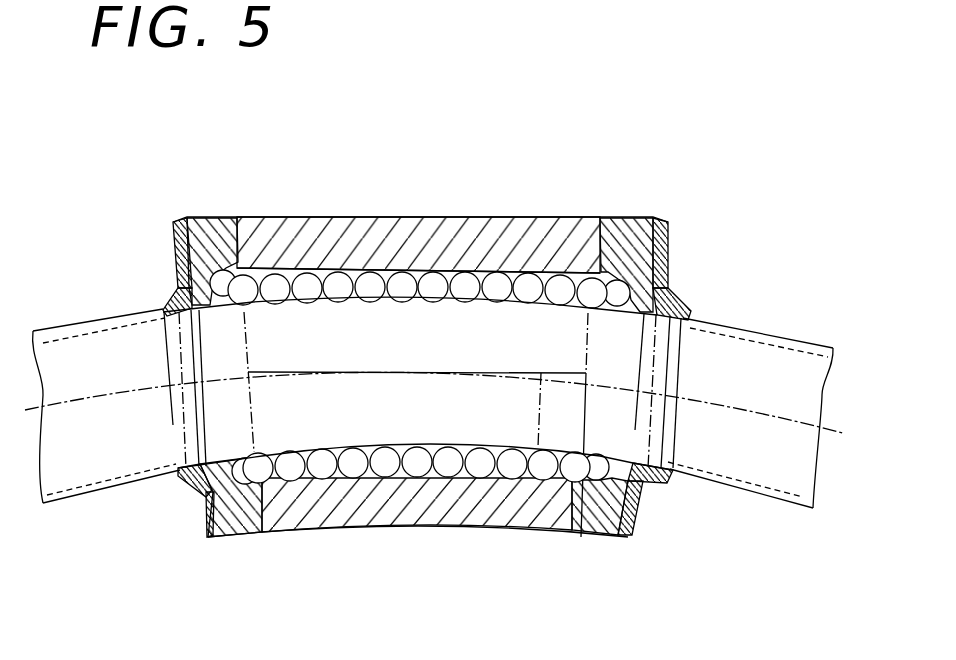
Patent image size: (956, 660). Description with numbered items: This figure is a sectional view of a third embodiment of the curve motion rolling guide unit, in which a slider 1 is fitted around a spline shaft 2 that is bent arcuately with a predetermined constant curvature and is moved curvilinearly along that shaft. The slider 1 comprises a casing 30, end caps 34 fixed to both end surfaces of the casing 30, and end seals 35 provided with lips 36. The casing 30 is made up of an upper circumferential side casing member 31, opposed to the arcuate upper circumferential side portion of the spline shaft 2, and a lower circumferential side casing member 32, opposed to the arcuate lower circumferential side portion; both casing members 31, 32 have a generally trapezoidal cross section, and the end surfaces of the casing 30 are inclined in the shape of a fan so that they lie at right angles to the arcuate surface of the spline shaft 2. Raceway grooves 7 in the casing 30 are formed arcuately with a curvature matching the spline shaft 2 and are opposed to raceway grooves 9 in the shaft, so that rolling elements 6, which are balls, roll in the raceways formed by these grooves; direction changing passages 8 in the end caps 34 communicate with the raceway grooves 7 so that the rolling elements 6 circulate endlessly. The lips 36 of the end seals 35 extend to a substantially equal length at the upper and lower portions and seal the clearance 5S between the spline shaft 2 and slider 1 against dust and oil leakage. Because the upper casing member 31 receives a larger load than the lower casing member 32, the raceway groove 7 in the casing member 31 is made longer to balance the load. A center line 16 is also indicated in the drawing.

The slider 1 is at (484, 204).
The spline shaft 2 is at (92, 362).
The clearance 5S is at (172, 294).
The rolling elements 6 is at (368, 280).
The raceway grooves 7 is at (432, 272).
The direction changing passages 8 is at (236, 270).
The raceway grooves 9 is at (773, 337).
The center line 16 is at (537, 480).
The casing 30 is at (304, 232).
The upper circumferential side casing member 31 is at (512, 242).
The lower circumferential side casing member 32 is at (403, 510).
The end caps 34 is at (207, 245).
The end seals 35 is at (668, 247).
The lips 36 is at (673, 303).